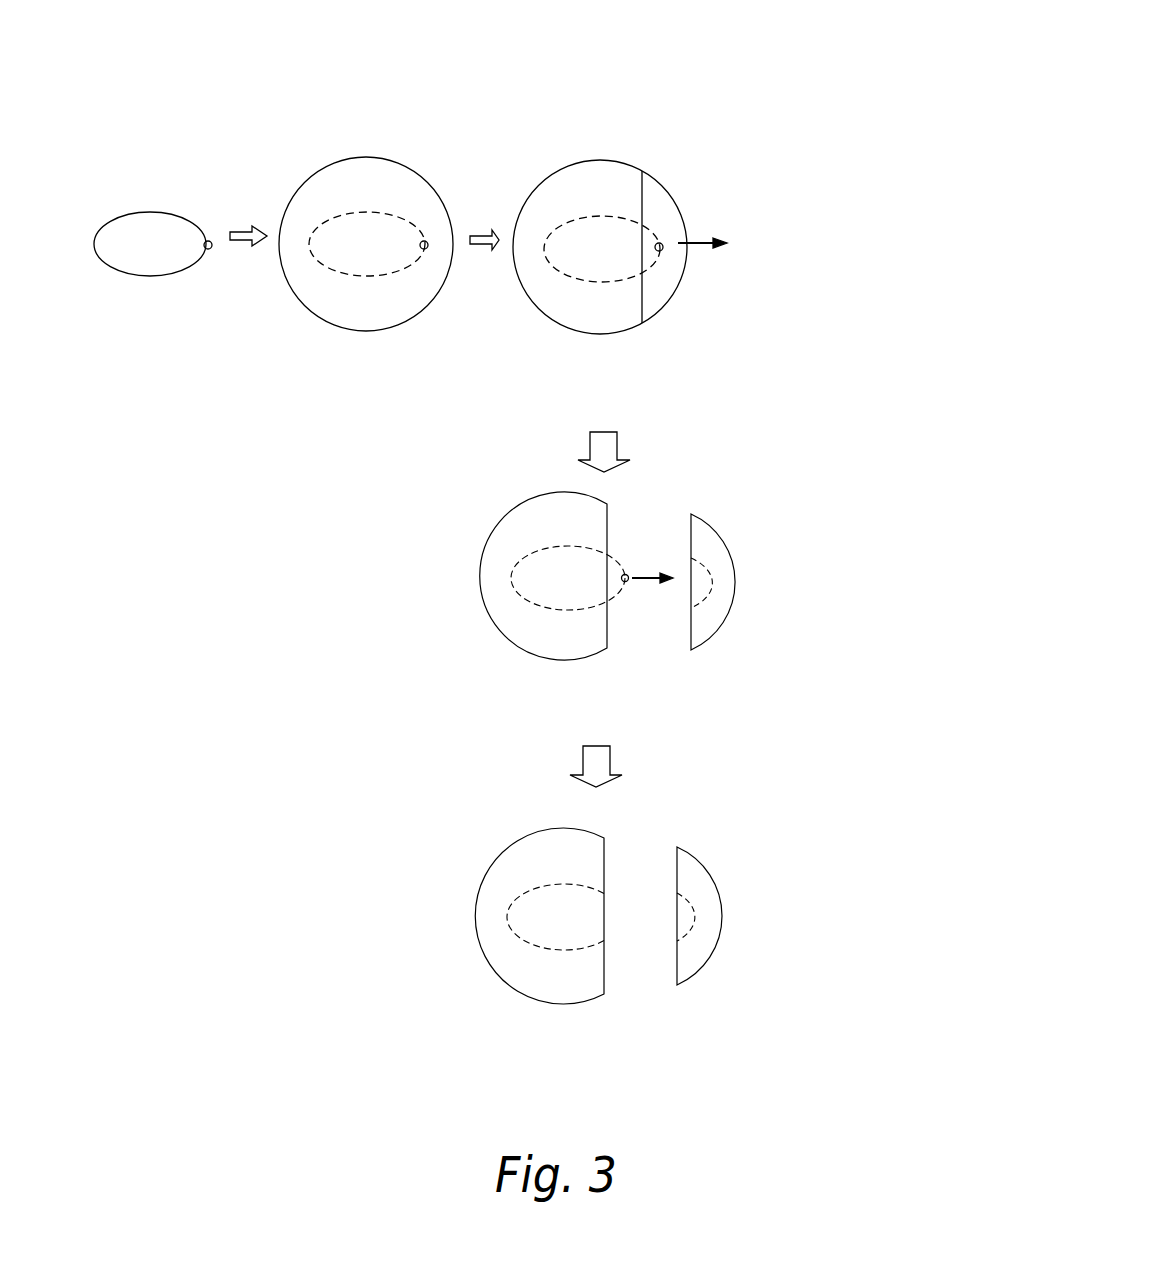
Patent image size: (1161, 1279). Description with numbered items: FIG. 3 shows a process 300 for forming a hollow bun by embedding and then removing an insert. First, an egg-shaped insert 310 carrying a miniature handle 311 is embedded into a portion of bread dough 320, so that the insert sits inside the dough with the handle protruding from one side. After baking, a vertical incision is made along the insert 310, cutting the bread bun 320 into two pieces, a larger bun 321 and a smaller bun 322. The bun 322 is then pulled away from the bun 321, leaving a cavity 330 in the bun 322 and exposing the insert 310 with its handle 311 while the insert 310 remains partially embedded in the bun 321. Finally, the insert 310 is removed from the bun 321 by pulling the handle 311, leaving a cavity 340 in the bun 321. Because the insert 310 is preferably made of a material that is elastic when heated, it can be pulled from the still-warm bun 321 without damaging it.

The method of forming a mold 300 is at (822, 84).
The egg-shaped insert 310 is at (162, 212).
The handle 311 is at (210, 253).
The bread dough 320 is at (363, 157).
The bun 321 is at (538, 185).
The bun 322 is at (662, 187).
The cavity 330 is at (700, 600).
The cavity 340 is at (548, 948).